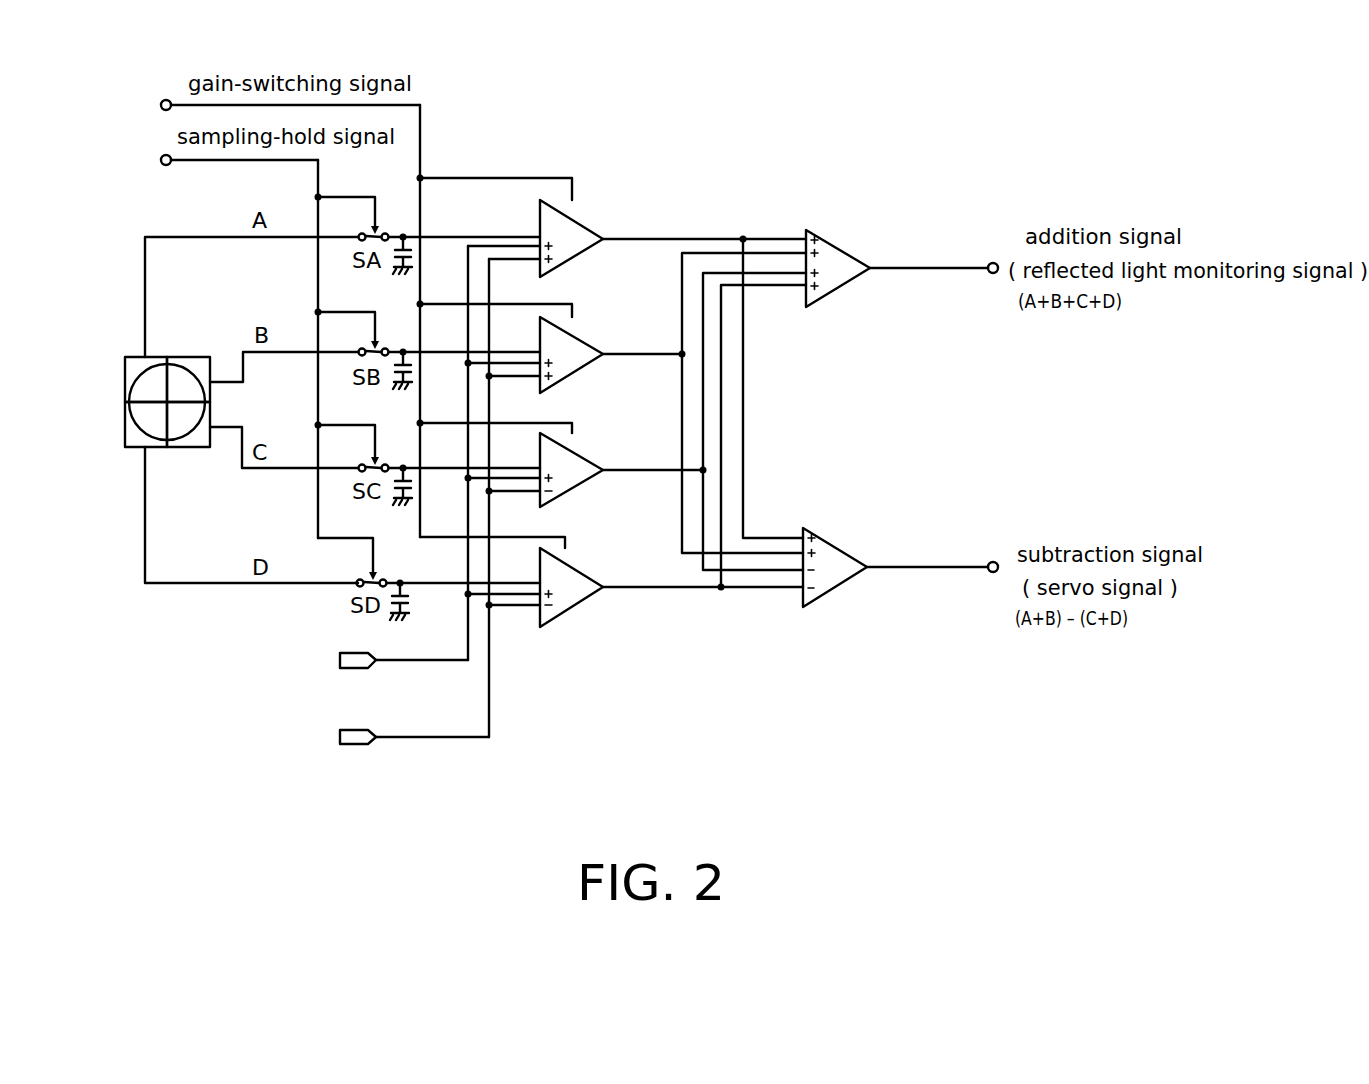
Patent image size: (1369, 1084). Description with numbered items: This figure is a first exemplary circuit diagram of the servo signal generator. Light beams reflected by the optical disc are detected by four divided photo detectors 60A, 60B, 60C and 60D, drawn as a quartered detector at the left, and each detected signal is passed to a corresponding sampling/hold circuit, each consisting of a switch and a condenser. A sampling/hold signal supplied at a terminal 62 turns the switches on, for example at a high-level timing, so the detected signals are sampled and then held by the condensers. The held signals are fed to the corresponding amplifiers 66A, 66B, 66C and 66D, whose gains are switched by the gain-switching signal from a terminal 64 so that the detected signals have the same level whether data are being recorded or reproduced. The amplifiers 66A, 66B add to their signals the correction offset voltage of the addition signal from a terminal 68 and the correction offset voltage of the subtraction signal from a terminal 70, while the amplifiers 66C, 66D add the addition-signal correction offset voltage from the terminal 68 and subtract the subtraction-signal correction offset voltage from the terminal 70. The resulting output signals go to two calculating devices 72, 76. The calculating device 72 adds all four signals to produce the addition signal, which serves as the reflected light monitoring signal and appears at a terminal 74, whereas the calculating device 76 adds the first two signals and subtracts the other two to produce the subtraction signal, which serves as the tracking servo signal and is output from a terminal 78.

The photo detector 60A is at (130, 372).
The photo detector 60B is at (193, 362).
The photo detector 60C is at (192, 443).
The photo detector 60D is at (130, 435).
The terminal 62 is at (161, 157).
The terminal 64 is at (161, 102).
The amplifier 66A is at (585, 252).
The amplifier 66B is at (585, 367).
The amplifier 66C is at (585, 487).
The amplifier 66D is at (585, 607).
The terminal 68 is at (347, 655).
The terminal 70 is at (343, 731).
The calculating device 72 is at (837, 243).
The terminal 74 is at (992, 262).
The calculating device 76 is at (833, 547).
The terminal 78 is at (992, 561).